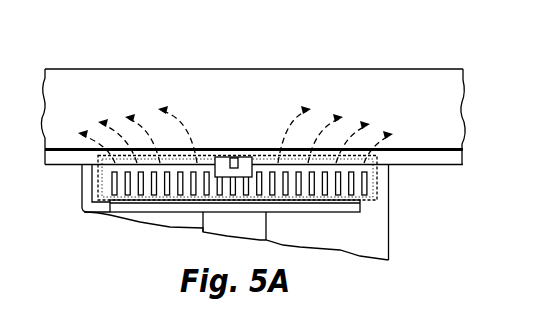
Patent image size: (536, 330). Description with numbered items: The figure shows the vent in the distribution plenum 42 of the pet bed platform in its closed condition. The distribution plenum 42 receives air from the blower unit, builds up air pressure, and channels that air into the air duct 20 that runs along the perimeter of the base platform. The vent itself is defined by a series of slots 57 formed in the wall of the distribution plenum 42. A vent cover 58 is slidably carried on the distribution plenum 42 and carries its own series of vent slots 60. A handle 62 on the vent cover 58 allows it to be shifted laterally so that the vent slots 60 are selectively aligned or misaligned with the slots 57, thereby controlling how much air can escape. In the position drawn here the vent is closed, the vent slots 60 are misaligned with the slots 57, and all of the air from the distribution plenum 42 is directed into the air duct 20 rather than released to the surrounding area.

The air duct 20 is at (420, 83).
The distribution plenum 42 is at (374, 239).
The slots 57 is at (158, 177).
The vent cover 58 is at (372, 195).
The vent slots 60 is at (178, 183).
The handle 62 is at (248, 157).